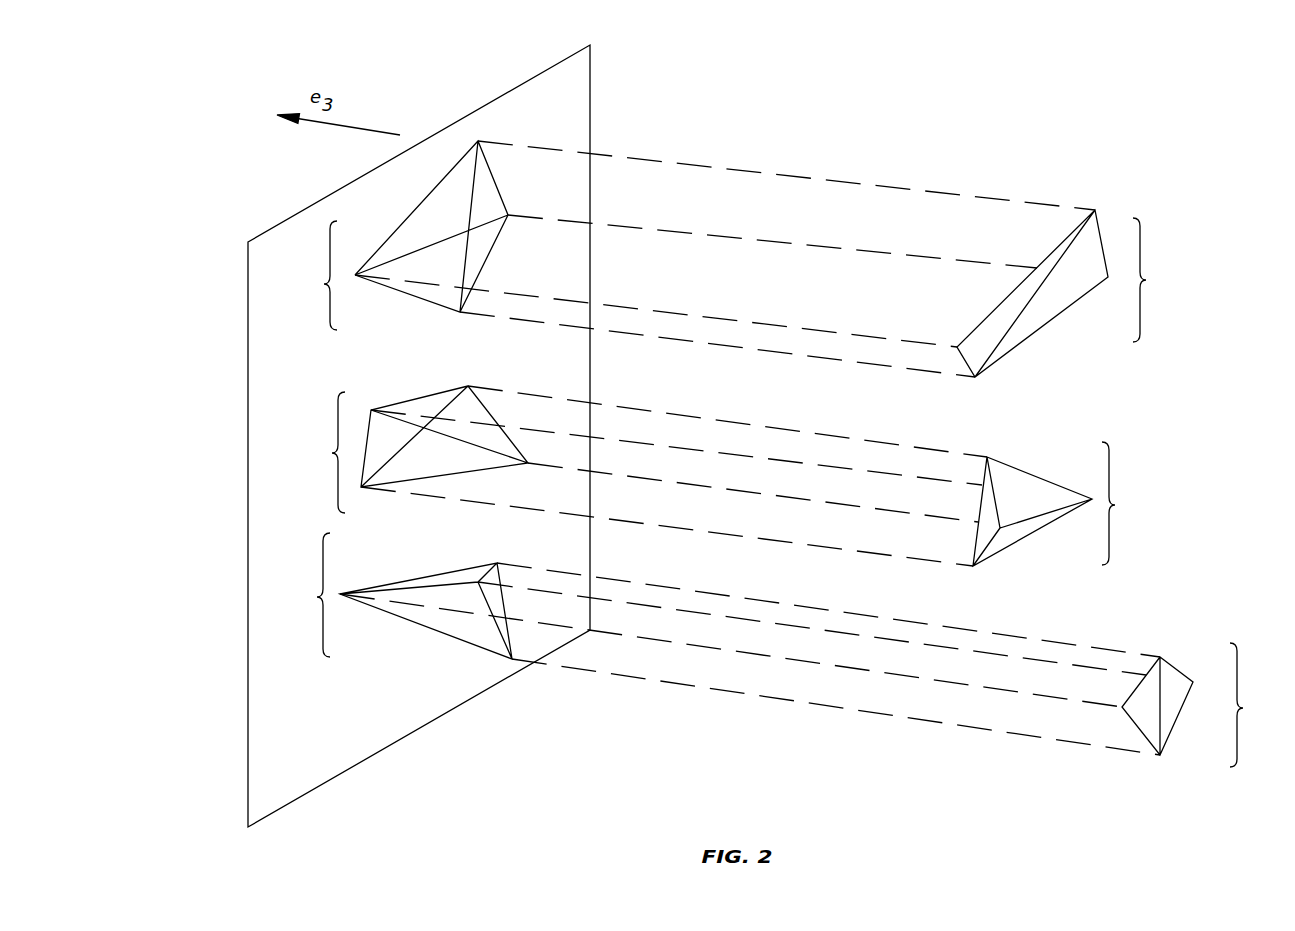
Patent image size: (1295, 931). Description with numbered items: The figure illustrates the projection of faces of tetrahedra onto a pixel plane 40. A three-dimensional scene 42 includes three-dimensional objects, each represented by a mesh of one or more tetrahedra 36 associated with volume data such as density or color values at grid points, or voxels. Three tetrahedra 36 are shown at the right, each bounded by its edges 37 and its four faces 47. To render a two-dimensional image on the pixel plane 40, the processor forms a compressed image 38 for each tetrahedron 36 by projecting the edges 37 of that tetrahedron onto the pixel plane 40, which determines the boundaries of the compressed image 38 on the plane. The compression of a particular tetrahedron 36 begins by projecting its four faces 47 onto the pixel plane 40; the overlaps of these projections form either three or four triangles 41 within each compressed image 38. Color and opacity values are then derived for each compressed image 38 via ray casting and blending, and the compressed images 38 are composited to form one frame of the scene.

The tetrahedron 36 is at (1086, 486).
The edges 37 is at (1064, 486).
The compressed image 38 is at (411, 400).
The pixel plane 40 is at (383, 436).
The triangles 41 is at (424, 230).
The 3-D scene 42 is at (1102, 165).
The faces 47 is at (1061, 285).